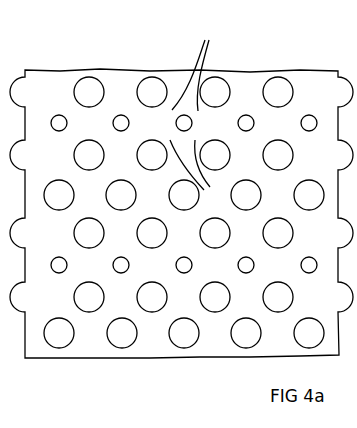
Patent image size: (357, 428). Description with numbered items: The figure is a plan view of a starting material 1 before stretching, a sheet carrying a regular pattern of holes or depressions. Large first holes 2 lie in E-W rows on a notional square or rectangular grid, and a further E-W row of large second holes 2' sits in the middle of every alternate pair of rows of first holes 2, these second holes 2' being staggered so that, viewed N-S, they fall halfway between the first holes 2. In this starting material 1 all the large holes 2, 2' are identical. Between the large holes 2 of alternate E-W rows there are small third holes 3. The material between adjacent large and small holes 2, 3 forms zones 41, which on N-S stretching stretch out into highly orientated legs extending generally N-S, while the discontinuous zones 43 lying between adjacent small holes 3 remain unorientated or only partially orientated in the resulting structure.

The starting material 1 is at (249, 72).
The first holes 2 is at (191, 210).
The second holes 2' is at (277, 291).
The third holes 3 is at (58, 115).
The zones between adjacent holes 41 is at (198, 117).
The zones between adjacent small holes 43 is at (92, 120).